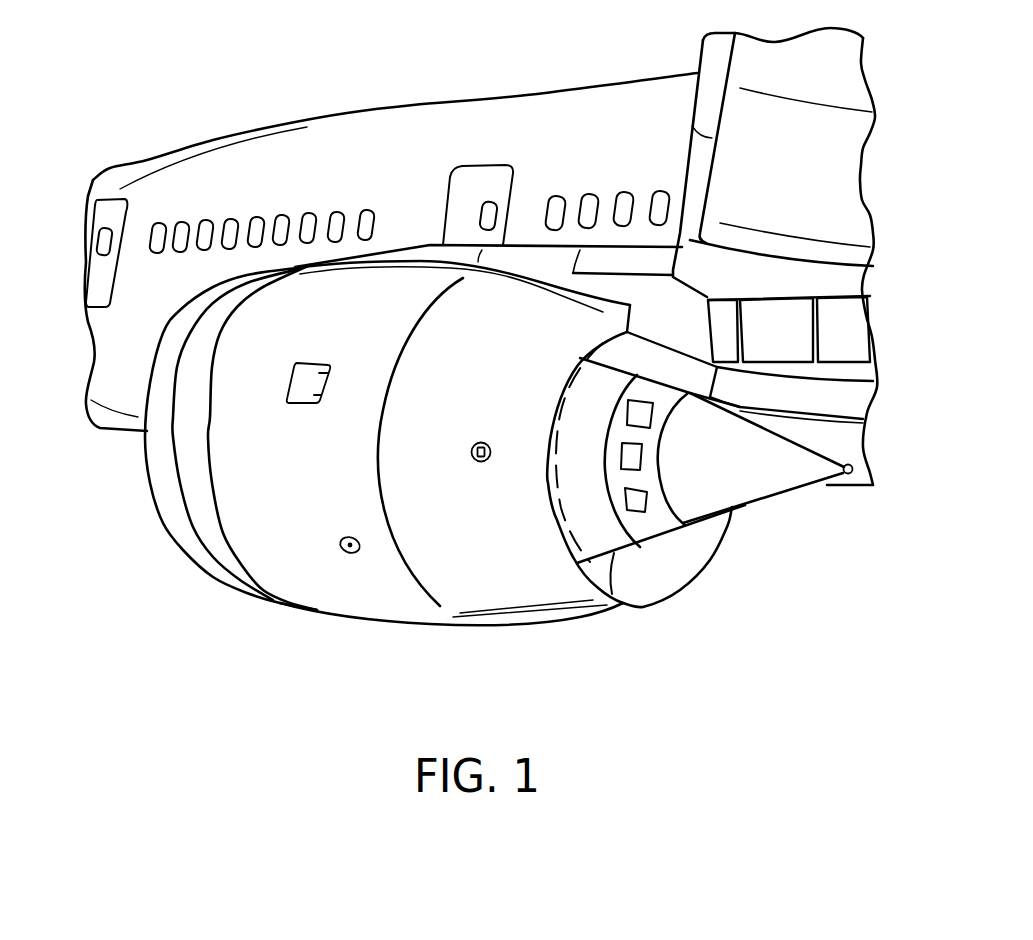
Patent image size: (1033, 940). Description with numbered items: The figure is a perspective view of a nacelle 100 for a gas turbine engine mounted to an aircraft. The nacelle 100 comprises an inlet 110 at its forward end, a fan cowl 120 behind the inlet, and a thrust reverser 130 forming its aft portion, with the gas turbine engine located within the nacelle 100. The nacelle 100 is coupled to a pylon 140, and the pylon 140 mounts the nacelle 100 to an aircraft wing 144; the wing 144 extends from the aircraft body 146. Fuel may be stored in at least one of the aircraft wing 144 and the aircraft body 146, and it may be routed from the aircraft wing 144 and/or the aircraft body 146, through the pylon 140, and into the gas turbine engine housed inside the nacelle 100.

The nacelle 100 is at (262, 660).
The inlet 110 is at (167, 530).
The fan cowl 120 is at (265, 545).
The thrust reverser 130 is at (450, 580).
The pylon 140 is at (526, 248).
The aircraft wing 144 is at (742, 113).
The aircraft body 146 is at (415, 148).